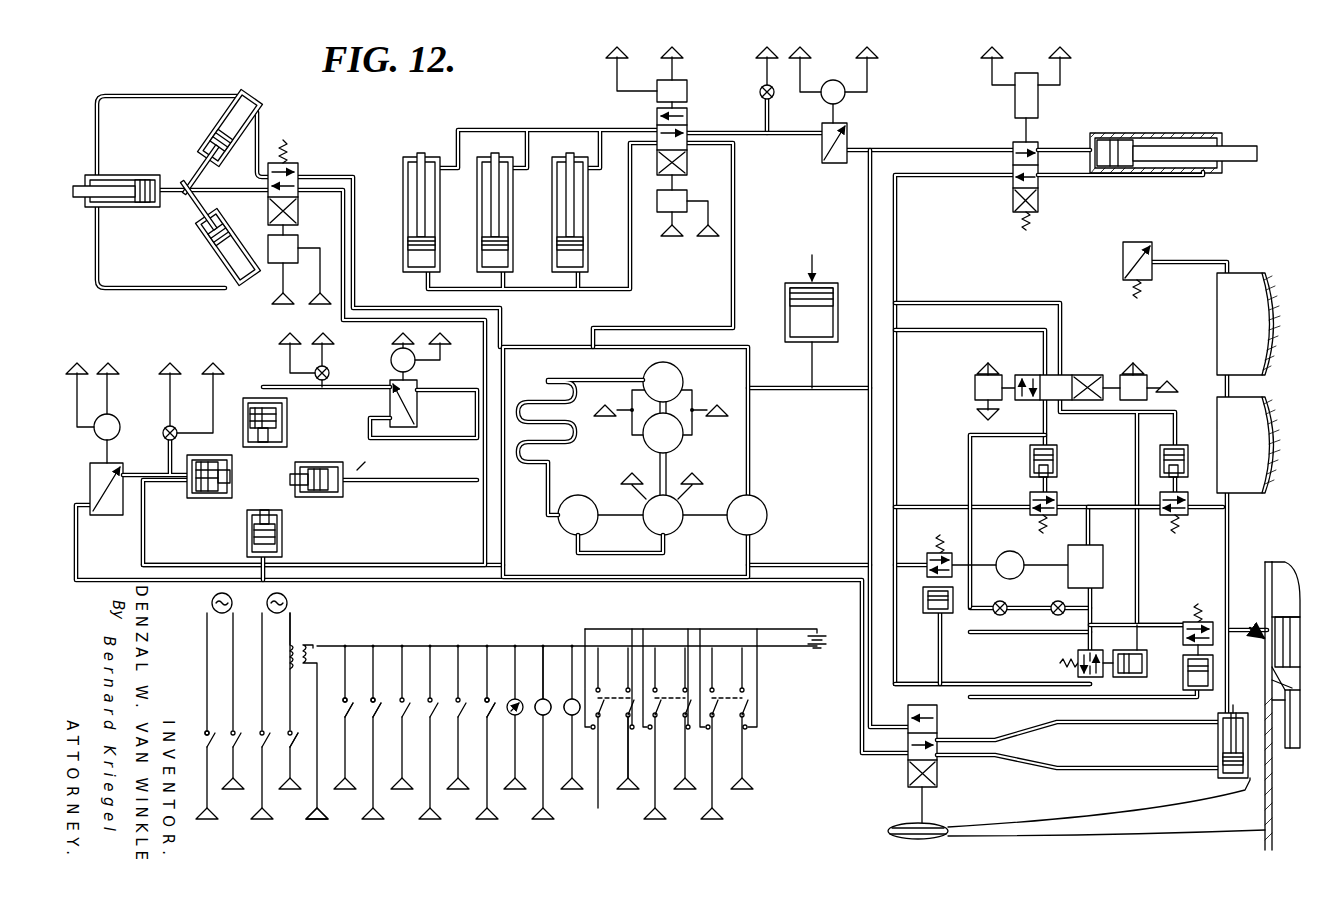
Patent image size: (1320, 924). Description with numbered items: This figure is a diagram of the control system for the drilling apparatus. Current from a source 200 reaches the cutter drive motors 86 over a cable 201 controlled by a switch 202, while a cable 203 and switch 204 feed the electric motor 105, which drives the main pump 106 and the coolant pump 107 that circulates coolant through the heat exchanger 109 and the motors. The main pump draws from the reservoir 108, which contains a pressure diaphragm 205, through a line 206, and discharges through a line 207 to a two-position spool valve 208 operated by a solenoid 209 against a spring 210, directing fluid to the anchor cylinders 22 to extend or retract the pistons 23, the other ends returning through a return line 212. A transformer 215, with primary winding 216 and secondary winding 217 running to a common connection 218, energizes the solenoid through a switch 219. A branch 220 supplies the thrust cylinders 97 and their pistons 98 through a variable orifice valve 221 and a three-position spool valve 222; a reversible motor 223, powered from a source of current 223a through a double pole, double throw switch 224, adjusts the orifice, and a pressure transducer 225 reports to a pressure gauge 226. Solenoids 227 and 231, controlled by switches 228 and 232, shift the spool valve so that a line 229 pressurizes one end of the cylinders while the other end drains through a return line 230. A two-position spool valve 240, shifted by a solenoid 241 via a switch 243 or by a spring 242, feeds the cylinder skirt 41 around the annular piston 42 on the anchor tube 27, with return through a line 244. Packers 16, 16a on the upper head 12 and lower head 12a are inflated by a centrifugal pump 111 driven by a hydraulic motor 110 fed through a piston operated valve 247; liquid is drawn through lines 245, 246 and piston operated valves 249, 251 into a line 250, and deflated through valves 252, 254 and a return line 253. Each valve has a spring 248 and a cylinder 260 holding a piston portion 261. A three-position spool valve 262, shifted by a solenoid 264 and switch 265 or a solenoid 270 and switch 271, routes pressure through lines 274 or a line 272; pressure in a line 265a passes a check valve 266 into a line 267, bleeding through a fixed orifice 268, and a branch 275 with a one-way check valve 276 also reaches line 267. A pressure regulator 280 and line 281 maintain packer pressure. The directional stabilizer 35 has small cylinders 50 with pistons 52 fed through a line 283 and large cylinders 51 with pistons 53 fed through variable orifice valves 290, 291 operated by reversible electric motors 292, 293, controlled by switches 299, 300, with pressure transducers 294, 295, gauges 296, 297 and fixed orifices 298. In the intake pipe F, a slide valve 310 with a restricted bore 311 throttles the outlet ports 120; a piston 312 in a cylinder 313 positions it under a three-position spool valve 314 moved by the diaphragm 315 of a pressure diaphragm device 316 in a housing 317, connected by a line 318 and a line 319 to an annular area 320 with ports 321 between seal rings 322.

The upper head 12 is at (1222, 318).
The lower head 12a is at (1222, 442).
The inflatable packing element 16 is at (1280, 310).
The lower inflatable packing element 16a is at (1276, 412).
The anchor cylinder 22 is at (114, 180).
The piston 23 is at (144, 210).
The anchor tube 27 is at (1248, 140).
The directional stabilizer 35 is at (364, 466).
The cylinder skirt 41 is at (1190, 133).
The annular piston 42 is at (1118, 140).
The cylinder bore 50 is at (322, 462).
The cylinder bore 51 is at (290, 435).
The piston 52 is at (316, 494).
The piston 53 is at (280, 410).
The electric cutter drive motor 86 is at (684, 372).
The thrust cylinder 97 is at (403, 202).
The piston 98 is at (410, 258).
The electric motor 105 is at (678, 532).
The main pump 106 is at (768, 508).
The coolant circulating pump 107 is at (565, 539).
The fluid reservoir 108 is at (785, 318).
The heat exchanger 109 is at (540, 450).
The hydraulic motor 110 is at (1004, 582).
The centrifugal pump 111 is at (1100, 548).
The outlet port 120 is at (1265, 588).
The source 200 is at (220, 595).
The cable 201 is at (618, 400).
The switch 202 is at (204, 732).
The electric cable 203 is at (638, 504).
The switch 204 is at (286, 740).
The pressure diaphragm 205 is at (820, 278).
The line 206 is at (752, 408).
The line 207 is at (360, 326).
The two-position spool valve 208 is at (300, 162).
The solenoid 209 is at (300, 236).
The spring 210 is at (287, 138).
The return line 212 is at (490, 305).
The transformer 215 is at (320, 636).
The primary winding 216 is at (300, 630).
The secondary winding 217 is at (318, 652).
The common connection 218 is at (318, 310).
The switch 219 is at (434, 712).
The branch 220 is at (996, 326).
The variable orifice valve 221 is at (849, 130).
The three-position spool valve 222 is at (689, 122).
The reversible motor 223 is at (848, 80).
The source of current 223a is at (816, 664).
The double pole, double throw switch 224 is at (628, 688).
The pressure transducer 225 is at (775, 100).
The pressure gauge 226 is at (572, 696).
The solenoid 227 is at (658, 80).
The switch 228 is at (462, 728).
The line 229 is at (752, 140).
The return line 230 is at (736, 218).
The solenoid 231 is at (689, 188).
The switch 232 is at (490, 716).
The two-position spool valve 240 is at (1013, 202).
The solenoid 241 is at (1040, 108).
The spring 242 is at (1034, 222).
The switch 243 is at (406, 728).
The line 244 is at (900, 218).
The line 245 is at (943, 502).
The intake line 246 is at (1094, 506).
The piston operated valve 247 is at (924, 590).
The spring 248 is at (1054, 532).
The piston operated valve 249 is at (1060, 482).
The line 250 is at (1140, 622).
The piston operated valve 251 is at (1183, 632).
The piston operated valve 252 is at (1160, 520).
The return line 253 is at (979, 682).
The piston operated valve 254 is at (1096, 680).
The cylinder 260 is at (1183, 682).
The piston portion 261 is at (1156, 670).
The three-position spool valve 262 is at (1062, 370).
The solenoid 264 is at (1146, 358).
The switch 265 is at (350, 712).
The line 265a is at (976, 508).
The check valve 266 is at (999, 614).
The line 267 is at (1004, 636).
The fixed orifice 268 is at (939, 666).
The solenoid 270 is at (974, 394).
The switch 271 is at (378, 712).
The line 272 is at (982, 304).
The line 274 is at (1120, 418).
The branch 275 is at (1102, 596).
The one-way check valve 276 is at (1068, 602).
The pressure regulator 280 is at (1154, 244).
The line 281 is at (1228, 255).
The line 283 is at (398, 478).
The variable orifice valve 290 is at (420, 400).
The variable orifice valve 291 is at (92, 518).
The reversible electric motor 292 is at (416, 370).
The reversible electric motor 293 is at (118, 412).
The pressure transducer 294 is at (330, 378).
The pressure transducer 295 is at (178, 424).
The pressure gauge 296 is at (514, 698).
The pressure gauge 297 is at (543, 698).
The fixed orifice 298 is at (139, 540).
The double pole, double throw switch 299 is at (685, 688).
The double pole, double throw switch 300 is at (742, 688).
The slide valve 310 is at (1250, 626).
The restricted bore 311 is at (1250, 686).
The piston 312 is at (1223, 756).
The cylinder 313 is at (1218, 736).
The three-position spool valve 314 is at (939, 716).
The diaphragm 315 is at (896, 842).
The pressure diaphragm device 316 is at (946, 820).
The housing 317 is at (912, 822).
The line 318 is at (1130, 838).
The line 319 is at (1156, 814).
The annular area 320 is at (1233, 710).
The port 321 is at (1256, 706).
The seal ring 322 is at (1254, 654).
The intake pipe F is at (1262, 812).